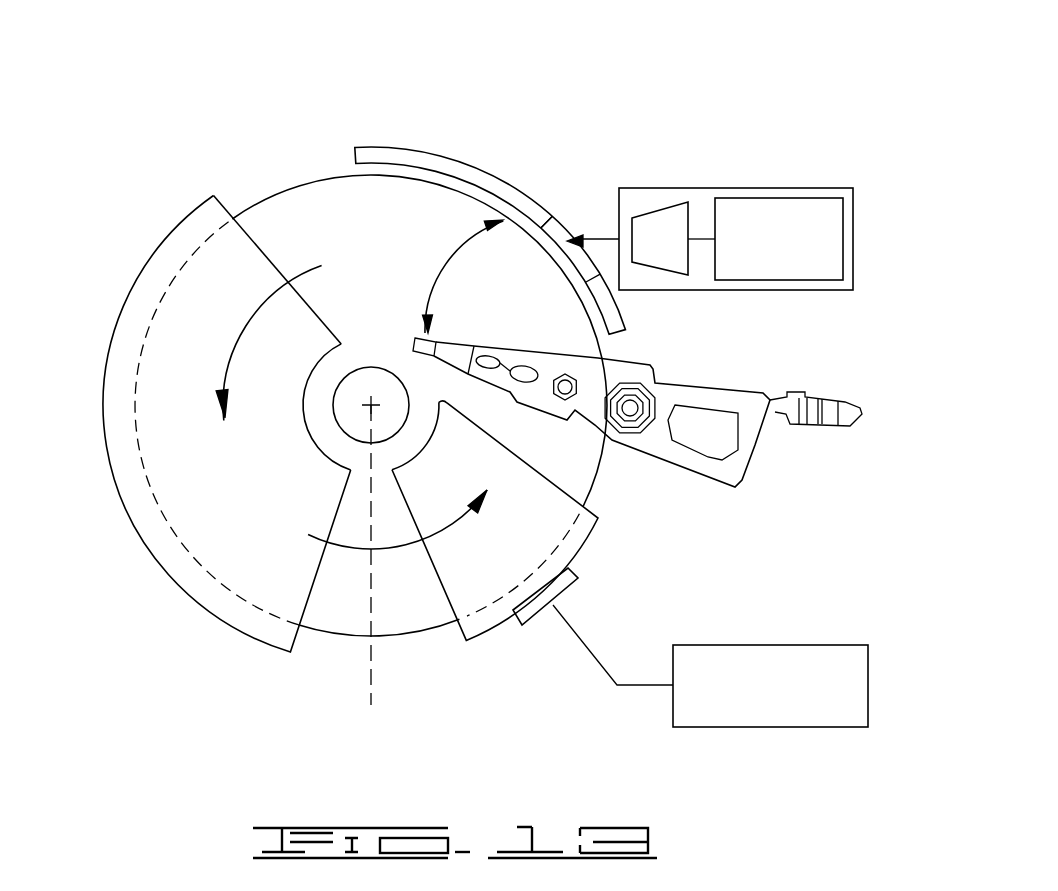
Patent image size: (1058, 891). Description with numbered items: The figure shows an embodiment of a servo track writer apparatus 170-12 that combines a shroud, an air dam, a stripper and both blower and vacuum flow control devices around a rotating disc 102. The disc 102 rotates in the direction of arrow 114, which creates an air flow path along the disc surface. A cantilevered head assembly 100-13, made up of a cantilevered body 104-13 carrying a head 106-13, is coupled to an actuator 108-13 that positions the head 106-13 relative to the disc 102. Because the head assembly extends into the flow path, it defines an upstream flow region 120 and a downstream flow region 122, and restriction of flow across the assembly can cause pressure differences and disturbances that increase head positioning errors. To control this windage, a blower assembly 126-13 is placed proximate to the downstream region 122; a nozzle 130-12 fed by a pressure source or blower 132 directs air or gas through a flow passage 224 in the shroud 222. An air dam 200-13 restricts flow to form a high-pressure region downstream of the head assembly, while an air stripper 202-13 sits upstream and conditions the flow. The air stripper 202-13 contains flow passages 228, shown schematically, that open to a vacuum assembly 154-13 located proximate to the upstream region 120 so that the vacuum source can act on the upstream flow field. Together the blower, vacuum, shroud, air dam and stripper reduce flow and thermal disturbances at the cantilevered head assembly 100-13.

The servo track writer or apparatus 170-12 is at (402, 92).
The rotating disc 102 is at (332, 177).
The shroud 222 is at (459, 162).
The flow passage 224 is at (558, 223).
The nozzle 130-12 is at (638, 213).
The blower assembly 126-13 is at (785, 188).
The pressure source or blower 132 is at (838, 205).
The air dam 200-13 is at (178, 223).
The arrow indicating disc rotation 114 is at (243, 333).
The head 106-13 is at (402, 330).
The cantilevered body 104-13 is at (440, 341).
The downstream flow region 122 is at (527, 278).
The cantilevered head assembly 100-13 is at (517, 350).
The actuator 108-13 is at (665, 402).
The upstream flow region 120 is at (563, 452).
The air stripper 202-13 is at (593, 548).
The vacuum assembly 154-13 is at (790, 645).
The flow passage or passages 228 is at (533, 618).